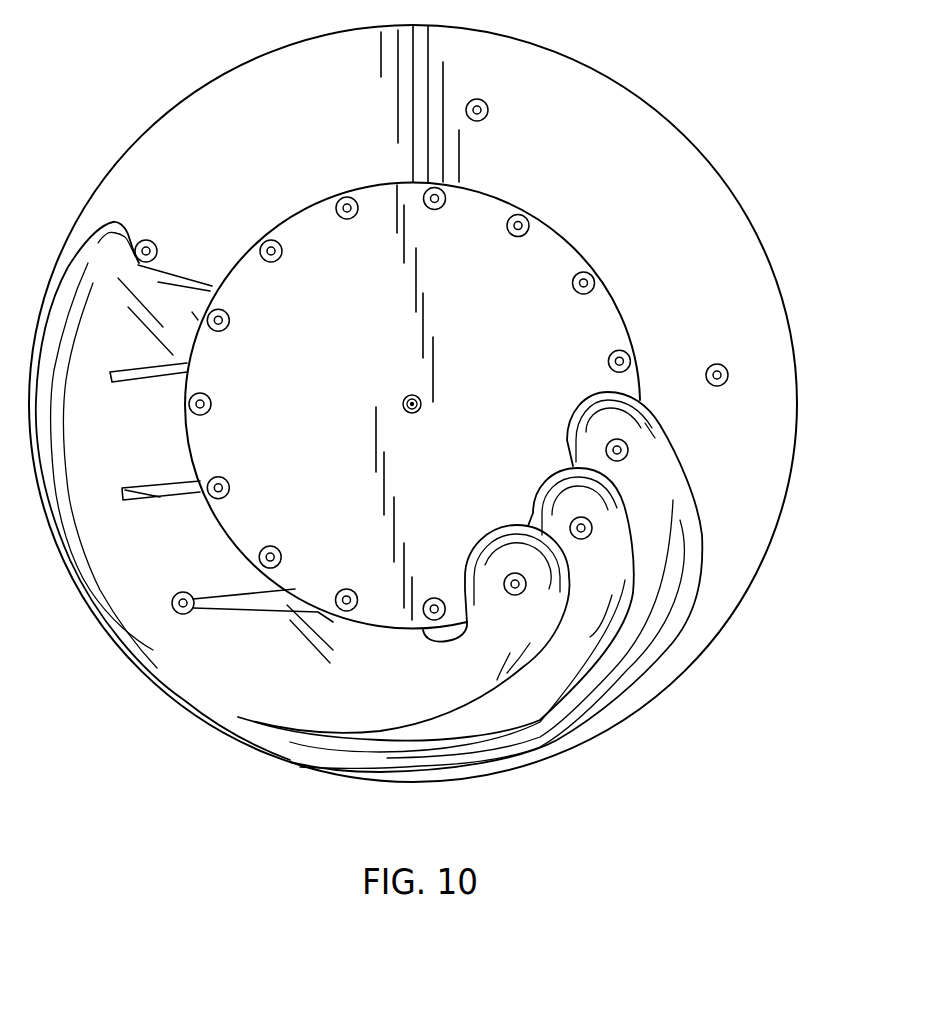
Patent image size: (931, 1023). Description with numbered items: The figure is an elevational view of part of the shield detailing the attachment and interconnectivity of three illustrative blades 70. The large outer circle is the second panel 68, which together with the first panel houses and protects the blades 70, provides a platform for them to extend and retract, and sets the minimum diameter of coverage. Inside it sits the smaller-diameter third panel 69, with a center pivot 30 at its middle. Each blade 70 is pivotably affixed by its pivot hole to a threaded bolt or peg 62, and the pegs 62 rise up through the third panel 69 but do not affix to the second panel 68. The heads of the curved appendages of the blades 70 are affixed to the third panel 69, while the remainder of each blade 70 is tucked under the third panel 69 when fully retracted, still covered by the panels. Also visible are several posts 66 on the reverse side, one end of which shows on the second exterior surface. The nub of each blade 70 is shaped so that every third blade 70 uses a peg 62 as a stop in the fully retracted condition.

The center pivot 30 is at (422, 404).
The peg 62 is at (628, 449).
The post 66 is at (488, 110).
The second panel 68 is at (720, 194).
The third panel 69 is at (553, 238).
The blade 70 is at (262, 718).